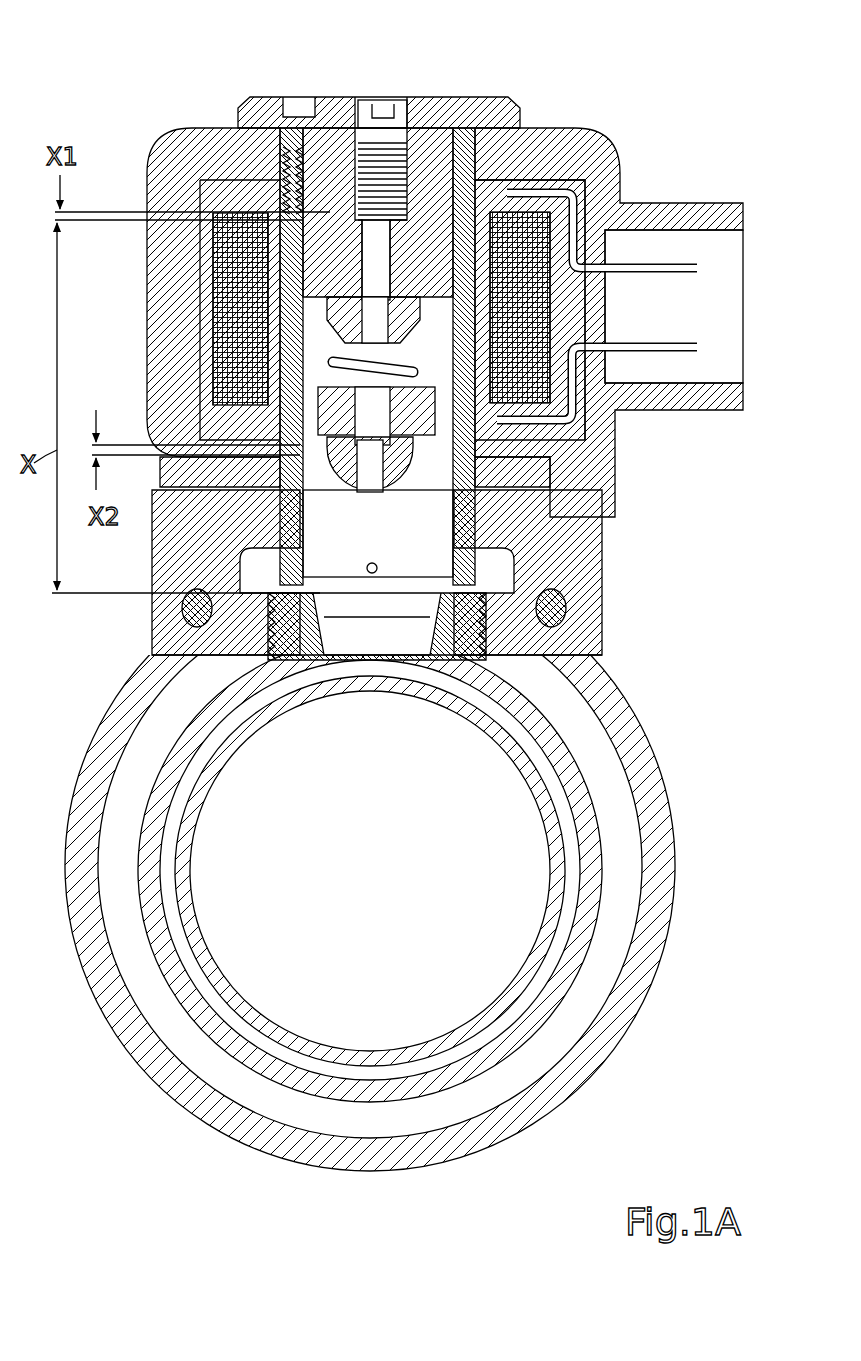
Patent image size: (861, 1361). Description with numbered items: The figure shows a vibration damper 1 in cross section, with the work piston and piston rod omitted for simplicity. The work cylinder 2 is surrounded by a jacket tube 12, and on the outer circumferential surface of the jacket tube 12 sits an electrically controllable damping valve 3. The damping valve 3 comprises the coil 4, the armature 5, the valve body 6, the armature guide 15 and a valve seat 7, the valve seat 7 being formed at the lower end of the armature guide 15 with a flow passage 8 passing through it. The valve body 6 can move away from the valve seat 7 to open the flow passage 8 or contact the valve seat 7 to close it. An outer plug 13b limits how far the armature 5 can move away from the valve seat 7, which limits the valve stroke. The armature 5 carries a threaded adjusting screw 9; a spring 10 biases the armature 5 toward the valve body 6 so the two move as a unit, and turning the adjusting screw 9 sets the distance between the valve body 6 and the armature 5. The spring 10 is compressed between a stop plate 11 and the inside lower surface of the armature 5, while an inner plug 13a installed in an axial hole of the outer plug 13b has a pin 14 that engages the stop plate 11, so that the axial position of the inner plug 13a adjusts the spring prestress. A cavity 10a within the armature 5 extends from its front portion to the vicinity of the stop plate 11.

The vibration damper 1 is at (686, 1011).
The work cylinder 2 is at (565, 850).
The electrically controllable damping valve 3 is at (760, 315).
The coil 4 is at (540, 222).
The armature 5 is at (527, 133).
The valve body 6 is at (547, 503).
The valve seat 7 is at (497, 640).
The flow passage 8 is at (405, 637).
The adjusting screw 9 is at (540, 442).
The spring 10 is at (355, 357).
The cavity 10a is at (520, 345).
The stop plate 11 is at (242, 318).
The jacket tube 12 is at (665, 905).
The inner plug 13a is at (410, 185).
The outer plug 13b is at (333, 97).
The pin 14 is at (440, 268).
The armature guide 15 is at (308, 220).